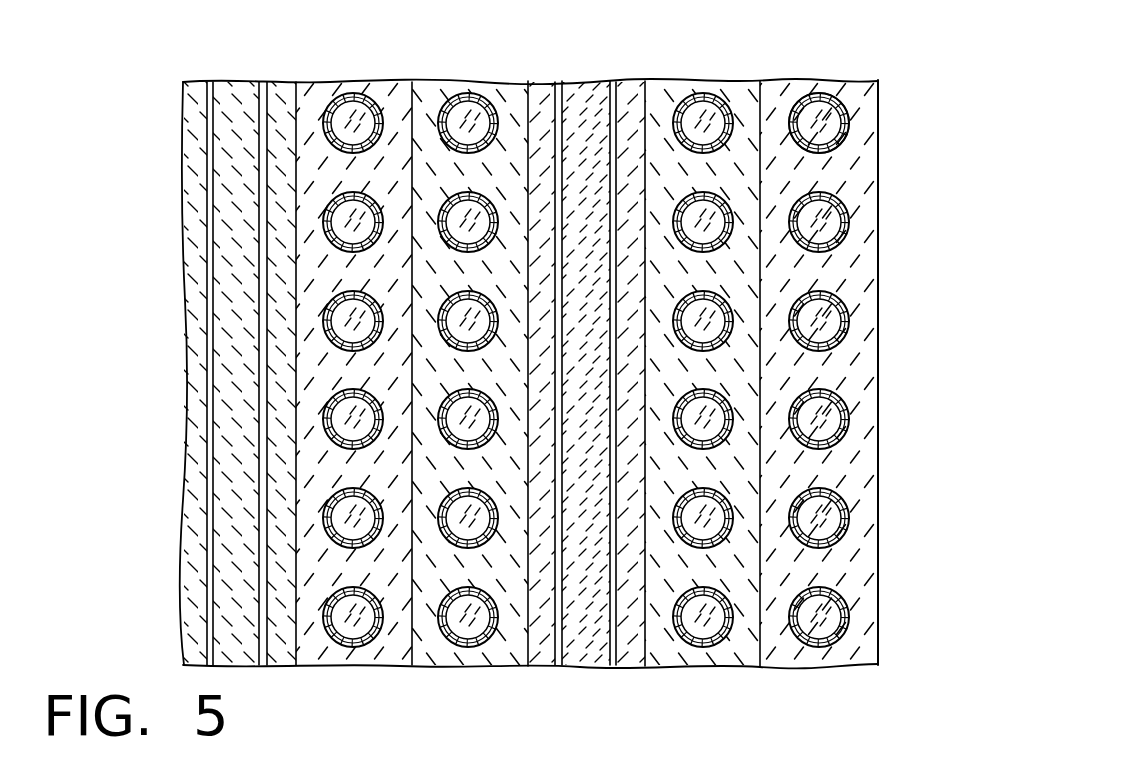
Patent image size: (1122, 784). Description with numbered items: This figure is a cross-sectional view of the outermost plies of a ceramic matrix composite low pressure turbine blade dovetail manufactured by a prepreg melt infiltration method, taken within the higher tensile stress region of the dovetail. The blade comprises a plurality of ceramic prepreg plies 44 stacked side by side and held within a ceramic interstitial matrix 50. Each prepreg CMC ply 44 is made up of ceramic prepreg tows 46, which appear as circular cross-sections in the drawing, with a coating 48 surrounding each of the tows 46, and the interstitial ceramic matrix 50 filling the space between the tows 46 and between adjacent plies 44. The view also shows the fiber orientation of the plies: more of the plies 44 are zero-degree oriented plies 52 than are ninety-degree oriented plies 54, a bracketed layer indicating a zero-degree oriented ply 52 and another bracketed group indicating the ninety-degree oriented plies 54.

The ceramic prepreg plies 44 is at (586, 66).
The ceramic prepreg tows 46 is at (586, 105).
The coating 48 is at (613, 88).
The interstitial ceramic matrix 50 is at (818, 271).
The 0° oriented plies 52 is at (760, 72).
The 90° oriented plies 54 is at (642, 673).